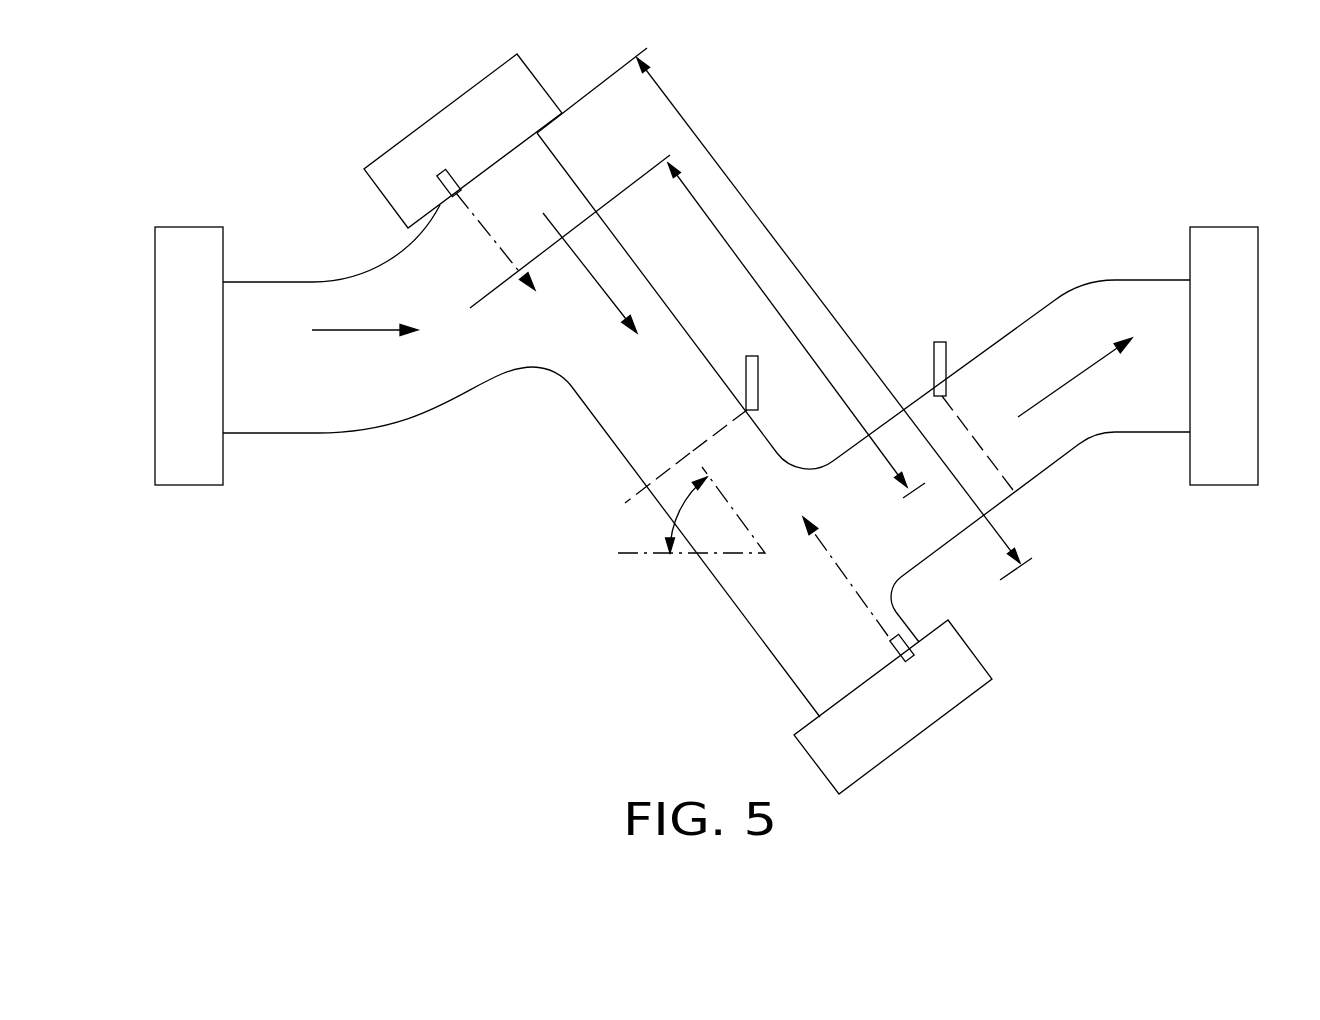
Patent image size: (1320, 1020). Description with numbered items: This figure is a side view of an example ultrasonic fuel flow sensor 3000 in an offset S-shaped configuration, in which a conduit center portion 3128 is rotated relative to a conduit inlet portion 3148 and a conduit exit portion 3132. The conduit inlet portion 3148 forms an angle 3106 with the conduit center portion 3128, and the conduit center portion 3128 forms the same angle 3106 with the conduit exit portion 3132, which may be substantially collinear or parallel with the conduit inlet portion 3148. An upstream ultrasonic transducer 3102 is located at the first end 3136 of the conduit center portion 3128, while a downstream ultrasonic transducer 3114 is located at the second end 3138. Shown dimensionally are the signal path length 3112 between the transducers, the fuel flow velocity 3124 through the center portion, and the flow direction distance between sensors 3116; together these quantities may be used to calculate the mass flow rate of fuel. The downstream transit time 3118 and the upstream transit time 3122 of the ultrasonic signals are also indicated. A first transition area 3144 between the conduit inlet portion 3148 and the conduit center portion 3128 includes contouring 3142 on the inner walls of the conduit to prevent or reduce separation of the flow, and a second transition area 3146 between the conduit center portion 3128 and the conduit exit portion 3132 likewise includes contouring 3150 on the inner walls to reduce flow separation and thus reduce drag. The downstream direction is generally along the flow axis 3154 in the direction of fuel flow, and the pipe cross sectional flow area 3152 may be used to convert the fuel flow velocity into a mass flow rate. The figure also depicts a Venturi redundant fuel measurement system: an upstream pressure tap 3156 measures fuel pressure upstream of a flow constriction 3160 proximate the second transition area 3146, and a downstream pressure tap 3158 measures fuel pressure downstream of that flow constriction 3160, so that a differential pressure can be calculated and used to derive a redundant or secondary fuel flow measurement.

The fuel flow sensor 3000 is at (976, 174).
The upstream ultrasonic transducer 3102 is at (445, 178).
The angle 3106 is at (663, 507).
The signal path length 3112 is at (778, 240).
The downstream ultrasonic transducer 3114 is at (915, 660).
The flow direction distance between sensors 3116 is at (742, 257).
The downstream transit time 3118 is at (494, 230).
The upstream transit time 3122 is at (838, 558).
The fuel flow velocity 3124 is at (603, 296).
The conduit center portion 3128 is at (655, 462).
The conduit exit portion 3132 is at (1087, 370).
The first end 3136 is at (455, 118).
The second end 3138 is at (937, 720).
The contouring 3142 is at (378, 390).
The first transition area 3144 is at (483, 363).
The second transition area 3146 is at (890, 602).
The conduit inlet portion 3148 is at (293, 433).
The contouring 3150 is at (1152, 280).
The flow area 3152 is at (722, 427).
The flow axis 3154 is at (740, 483).
The upstream pressure tap 3156 is at (752, 356).
The downstream pressure tap 3158 is at (940, 342).
The flow constriction 3160 is at (1022, 498).